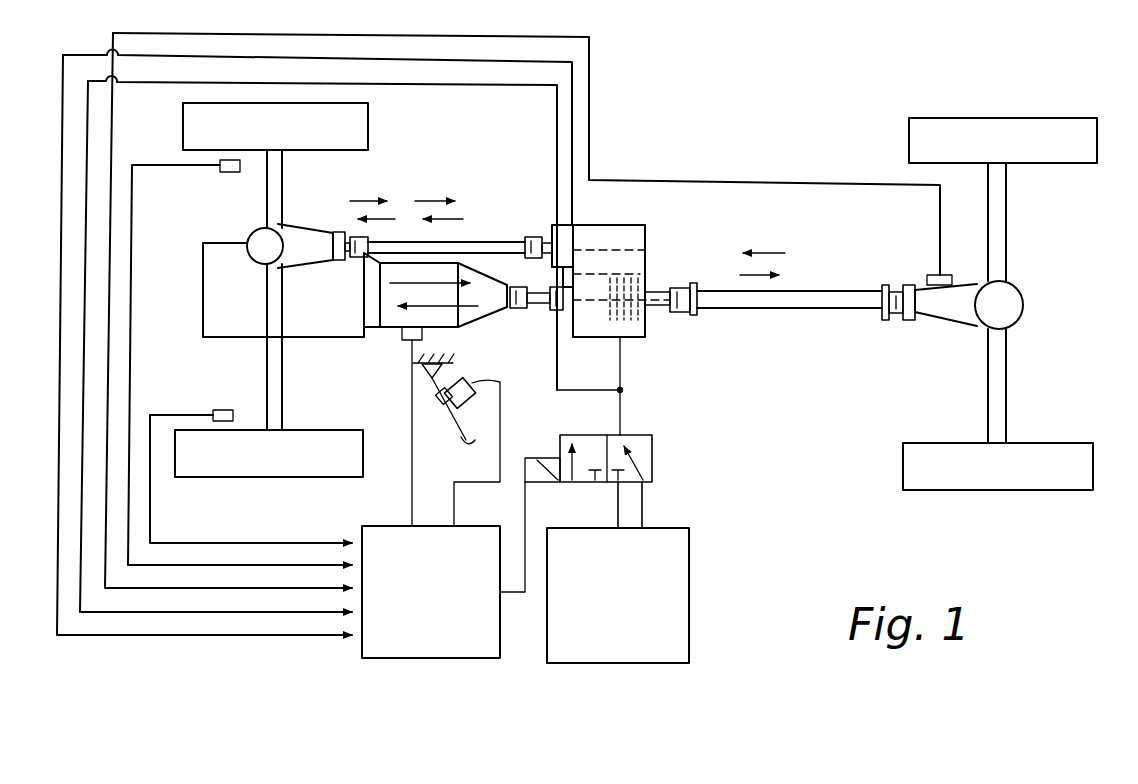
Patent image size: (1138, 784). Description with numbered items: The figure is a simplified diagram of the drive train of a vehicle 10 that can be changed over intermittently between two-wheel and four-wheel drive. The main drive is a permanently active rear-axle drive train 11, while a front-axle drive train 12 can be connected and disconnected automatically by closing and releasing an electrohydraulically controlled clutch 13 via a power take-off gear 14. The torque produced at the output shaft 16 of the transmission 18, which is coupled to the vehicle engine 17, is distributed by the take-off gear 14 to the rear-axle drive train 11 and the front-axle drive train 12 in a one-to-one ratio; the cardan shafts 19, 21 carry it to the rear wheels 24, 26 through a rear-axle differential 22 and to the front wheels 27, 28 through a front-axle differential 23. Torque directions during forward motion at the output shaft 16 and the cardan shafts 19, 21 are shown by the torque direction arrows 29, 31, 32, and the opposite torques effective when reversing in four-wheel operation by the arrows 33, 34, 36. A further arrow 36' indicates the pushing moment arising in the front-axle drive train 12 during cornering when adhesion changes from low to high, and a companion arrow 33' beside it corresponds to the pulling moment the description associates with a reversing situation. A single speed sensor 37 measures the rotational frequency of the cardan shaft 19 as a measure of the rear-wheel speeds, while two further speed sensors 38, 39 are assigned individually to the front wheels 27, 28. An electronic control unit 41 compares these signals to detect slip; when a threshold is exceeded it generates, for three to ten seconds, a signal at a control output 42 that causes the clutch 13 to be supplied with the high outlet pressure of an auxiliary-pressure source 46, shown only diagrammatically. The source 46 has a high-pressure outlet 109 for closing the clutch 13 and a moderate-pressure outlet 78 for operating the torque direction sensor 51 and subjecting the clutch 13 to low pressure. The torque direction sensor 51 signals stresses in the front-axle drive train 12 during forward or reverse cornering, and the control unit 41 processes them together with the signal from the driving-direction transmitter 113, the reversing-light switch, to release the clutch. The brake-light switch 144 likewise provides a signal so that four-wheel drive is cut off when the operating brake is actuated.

The vehicle 10 is at (636, 138).
The rear-axle drive train 11 is at (857, 322).
The front-axle drive train 12 is at (508, 228).
The clutch 13 is at (641, 330).
The power take-off gear 14 is at (640, 243).
The output shaft 16 is at (537, 306).
The vehicle engine 17 is at (210, 292).
The transmission 18 is at (383, 327).
The cardan shaft 19 is at (746, 306).
The cardan shaft 21 is at (400, 245).
The rear-axle differential 22 is at (1020, 302).
The front-axle differential 23 is at (262, 255).
The rear wheel 24 is at (907, 464).
The rear wheel 26 is at (915, 140).
The front wheel 27 is at (253, 462).
The front wheel 28 is at (197, 137).
The torque direction arrow 29 is at (388, 320).
The torque direction arrow 31 is at (768, 252).
The torque direction arrow 32 is at (442, 217).
The arrow 33 is at (433, 295).
The torque flow arrow 33' is at (345, 206).
The arrow 34 is at (770, 274).
The arrow 36 is at (455, 179).
The arrow 36' is at (342, 182).
The speed sensor 37 is at (946, 273).
The speed sensor 38 is at (227, 408).
The speed sensor 39 is at (225, 173).
The electronic control unit 41 is at (378, 532).
The control output 42 is at (512, 596).
The auxiliary-pressure source 46 is at (680, 600).
The torque direction sensor 51 is at (543, 227).
The outlet 78 is at (643, 512).
The outlet 109 is at (616, 506).
The driving-direction transmitter 113 is at (407, 343).
The brake-light switch 144 is at (465, 381).